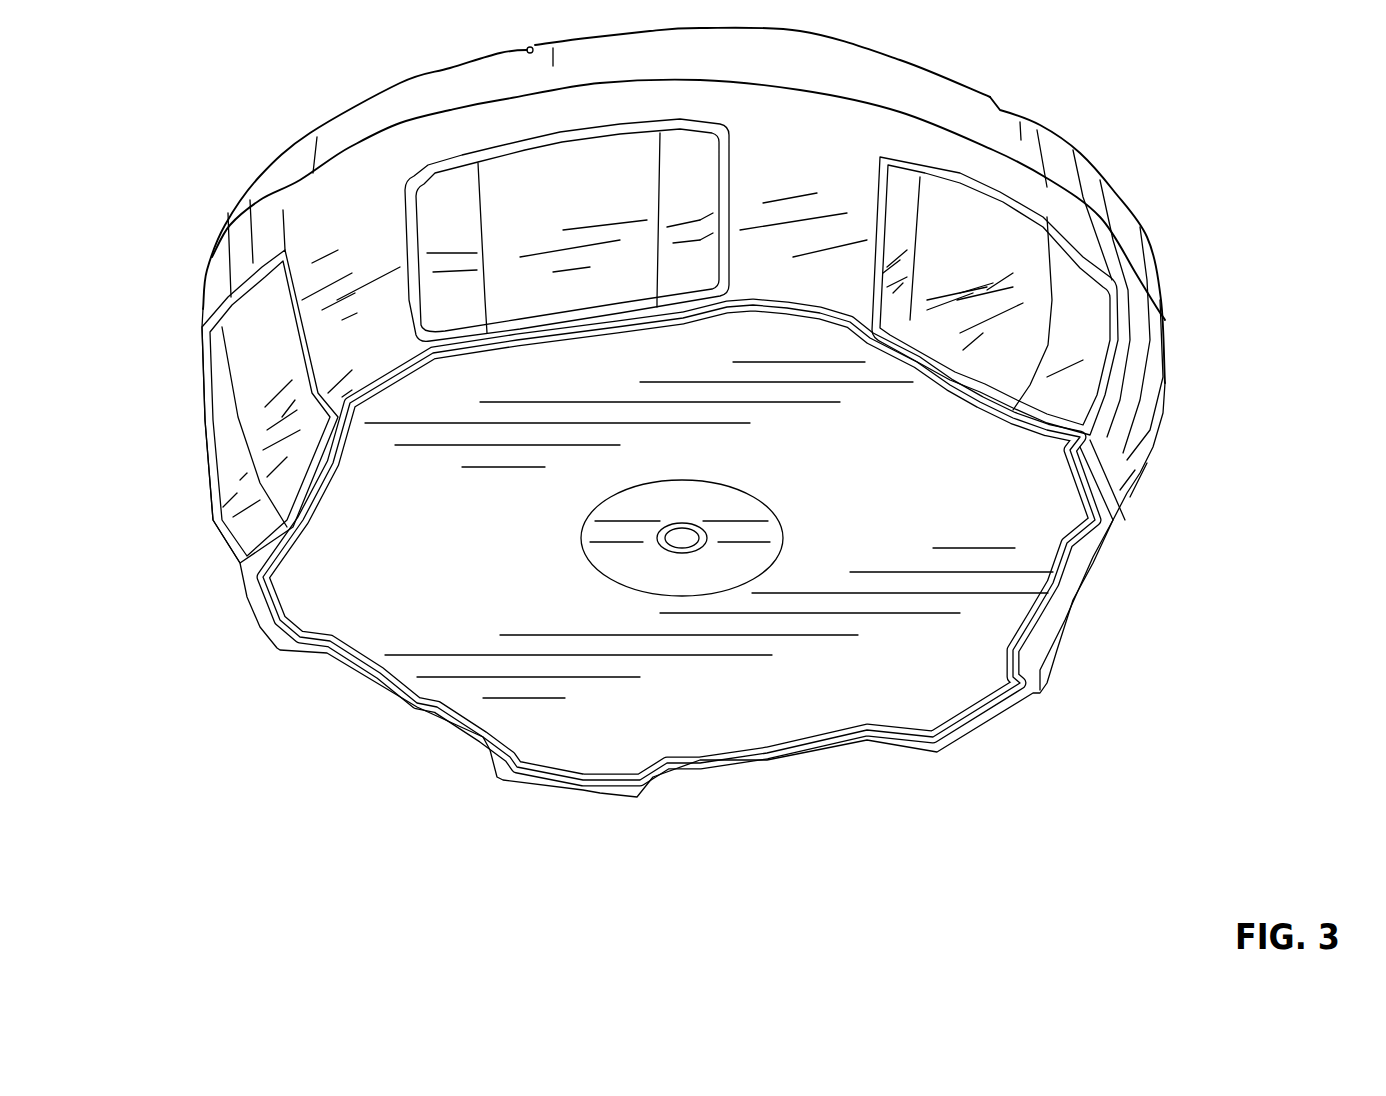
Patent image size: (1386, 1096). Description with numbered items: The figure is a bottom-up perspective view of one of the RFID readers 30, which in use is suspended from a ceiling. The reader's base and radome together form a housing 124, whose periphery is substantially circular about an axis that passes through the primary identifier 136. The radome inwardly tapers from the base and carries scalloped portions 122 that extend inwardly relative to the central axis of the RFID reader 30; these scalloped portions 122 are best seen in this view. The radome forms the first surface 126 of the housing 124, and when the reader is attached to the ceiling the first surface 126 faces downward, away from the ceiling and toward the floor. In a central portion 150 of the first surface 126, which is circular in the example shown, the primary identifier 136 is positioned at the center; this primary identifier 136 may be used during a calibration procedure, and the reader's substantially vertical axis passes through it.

The RFID reader 30 is at (218, 317).
The scalloped portions 122 is at (237, 477).
The housing 124 is at (1130, 455).
The first surface 126 is at (450, 693).
The central portion 150 is at (605, 525).
The primary identifier 136 is at (665, 540).